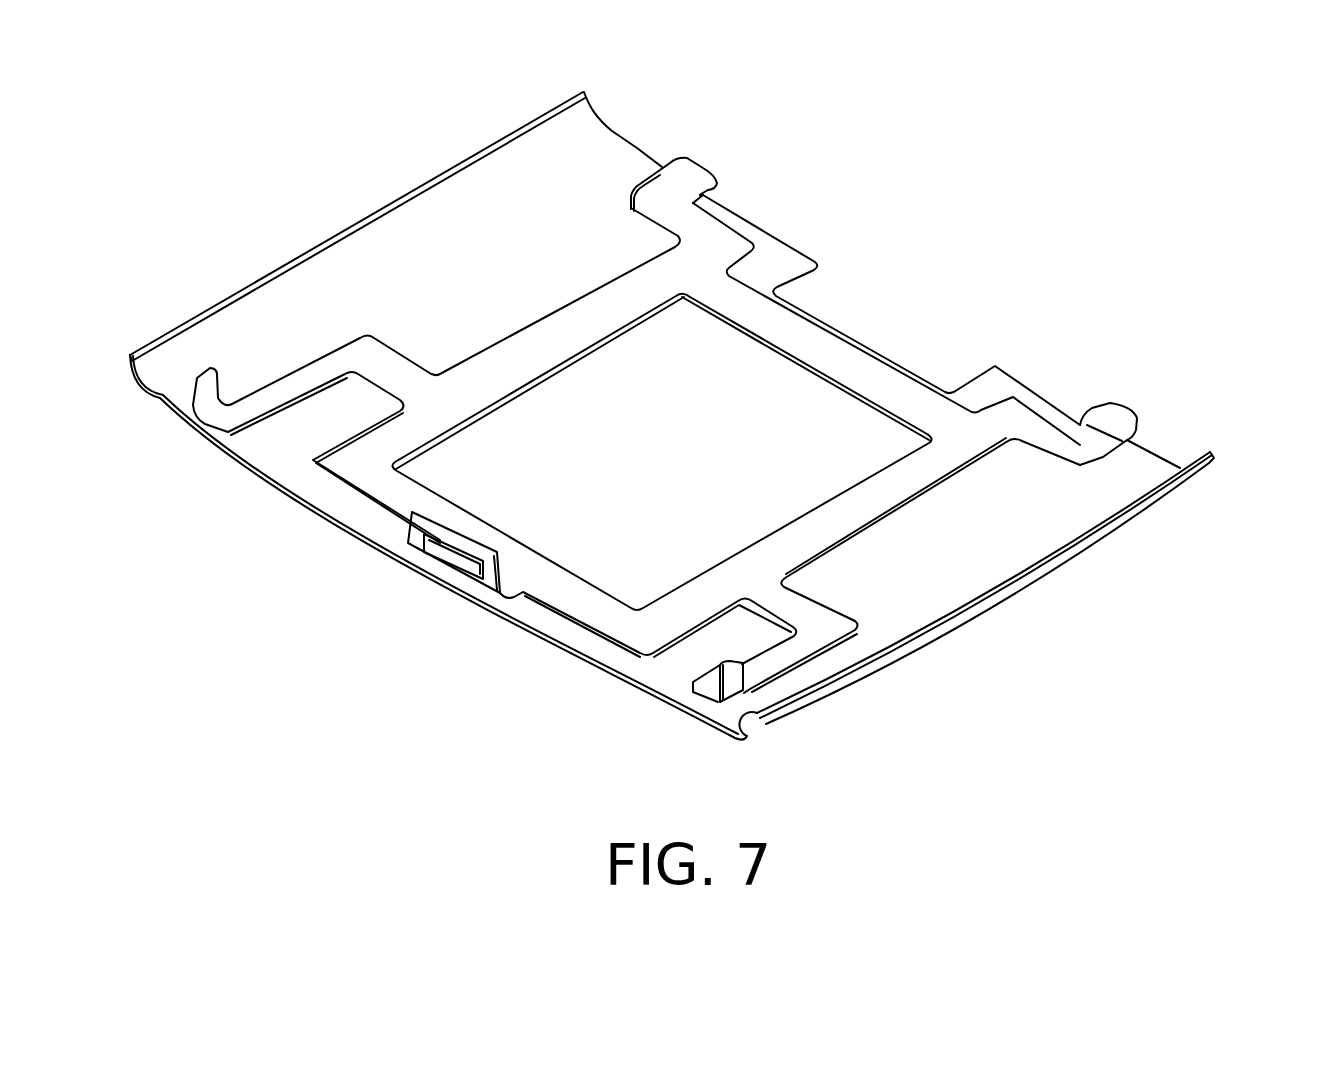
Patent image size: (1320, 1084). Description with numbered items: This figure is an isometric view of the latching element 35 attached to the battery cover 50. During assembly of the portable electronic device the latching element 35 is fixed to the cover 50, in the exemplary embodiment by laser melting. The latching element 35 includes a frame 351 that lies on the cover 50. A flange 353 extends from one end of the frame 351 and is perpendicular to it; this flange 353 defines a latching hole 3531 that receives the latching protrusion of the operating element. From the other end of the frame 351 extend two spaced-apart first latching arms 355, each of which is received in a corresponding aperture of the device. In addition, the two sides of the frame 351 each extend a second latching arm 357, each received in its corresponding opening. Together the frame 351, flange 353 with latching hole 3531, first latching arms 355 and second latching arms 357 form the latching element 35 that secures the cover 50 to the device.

The cover 50 is at (1145, 462).
The latching element 35 is at (1120, 418).
The frame 351 is at (820, 347).
The flange 353 is at (492, 585).
The latching hole 3531 is at (435, 546).
The first latching arm 355 is at (687, 170).
The second latching arm 357 is at (773, 657).